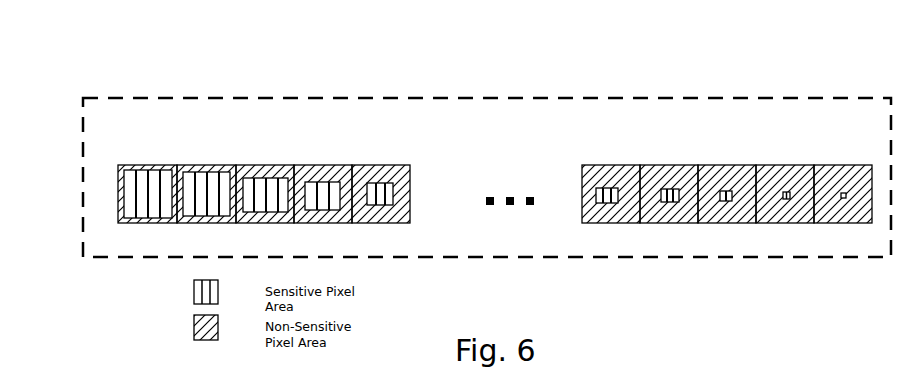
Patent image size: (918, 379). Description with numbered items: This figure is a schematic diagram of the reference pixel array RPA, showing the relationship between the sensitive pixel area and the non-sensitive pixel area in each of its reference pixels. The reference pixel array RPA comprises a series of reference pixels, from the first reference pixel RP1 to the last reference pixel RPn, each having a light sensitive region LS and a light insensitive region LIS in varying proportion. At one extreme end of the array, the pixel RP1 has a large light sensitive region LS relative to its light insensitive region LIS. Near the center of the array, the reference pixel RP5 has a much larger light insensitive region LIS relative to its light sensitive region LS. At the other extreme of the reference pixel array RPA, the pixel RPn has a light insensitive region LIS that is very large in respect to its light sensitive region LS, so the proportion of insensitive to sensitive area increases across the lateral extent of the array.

The reference pixel array RPA is at (429, 98).
The reference pixel RP1 is at (134, 147).
The reference pixel RP5 is at (384, 149).
The reference pixel RPn is at (843, 148).
The light sensitive region LS is at (150, 190).
The light insensitive region LIS is at (162, 221).